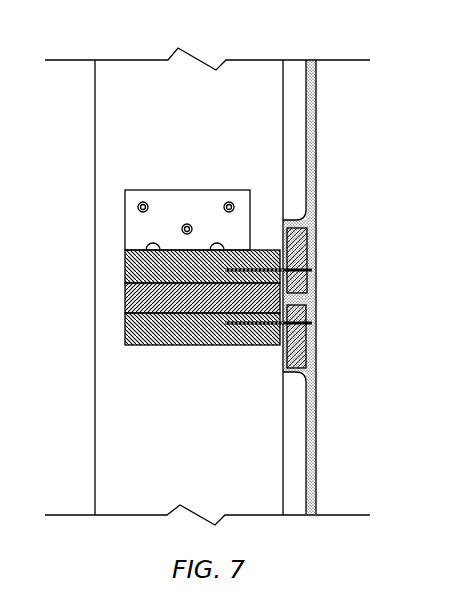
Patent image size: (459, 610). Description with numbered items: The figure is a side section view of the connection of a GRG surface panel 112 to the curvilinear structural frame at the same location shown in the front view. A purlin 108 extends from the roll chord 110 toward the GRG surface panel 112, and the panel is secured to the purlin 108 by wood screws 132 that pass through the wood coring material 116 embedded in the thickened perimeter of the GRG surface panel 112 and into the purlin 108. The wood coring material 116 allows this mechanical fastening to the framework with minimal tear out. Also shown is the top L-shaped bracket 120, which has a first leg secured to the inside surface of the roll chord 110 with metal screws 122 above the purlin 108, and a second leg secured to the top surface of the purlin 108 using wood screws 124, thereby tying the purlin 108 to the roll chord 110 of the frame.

The purlin 108 is at (123, 249).
The roll chord 110 is at (137, 128).
The GRG surface panel 112 is at (313, 113).
The wood coring material 116 is at (312, 232).
The top L-shaped bracket 120 is at (138, 220).
The metal screws 122 is at (144, 202).
The wood screws 124 is at (220, 244).
The wood screws 132 is at (312, 270).